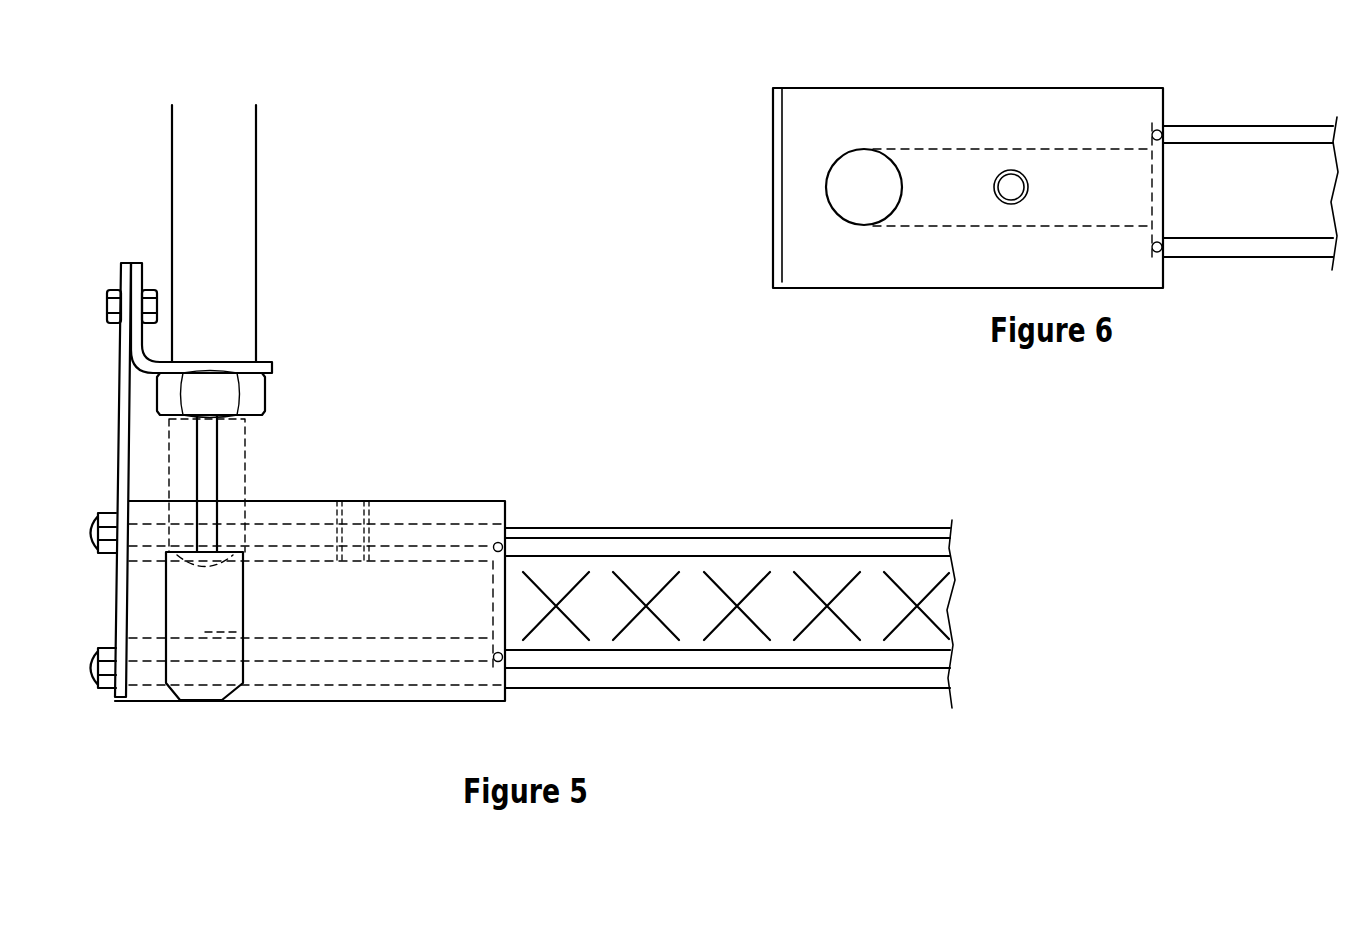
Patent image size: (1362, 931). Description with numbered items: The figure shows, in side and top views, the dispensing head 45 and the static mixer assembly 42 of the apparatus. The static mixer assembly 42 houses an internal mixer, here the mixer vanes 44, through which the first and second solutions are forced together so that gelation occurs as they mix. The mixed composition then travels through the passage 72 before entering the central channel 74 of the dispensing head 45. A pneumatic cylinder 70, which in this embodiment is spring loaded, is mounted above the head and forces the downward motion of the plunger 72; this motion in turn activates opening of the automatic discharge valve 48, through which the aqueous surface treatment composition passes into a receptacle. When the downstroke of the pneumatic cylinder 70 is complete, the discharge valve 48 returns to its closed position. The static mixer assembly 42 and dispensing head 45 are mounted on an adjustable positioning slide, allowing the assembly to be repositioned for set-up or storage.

In FIG. 5, the static mixer assembly 42 is at (735, 528).
In FIG. 6, the static mixer assembly 42 is at (1225, 126).
In FIG. 5, the mixer vanes 44 is at (808, 590).
In FIG. 5, the dispensing head 45 is at (375, 501).
In FIG. 6, the dispensing head 45 is at (1037, 88).
In FIG. 5, the automatic discharge valve 48 is at (235, 687).
In FIG. 5, the pneumatic cylinder 70 is at (257, 268).
In FIG. 6, the pneumatic cylinder 70 is at (866, 150).
In FIG. 5, the plunger 72 is at (217, 470).
In FIG. 5, the central channel 74 is at (297, 583).